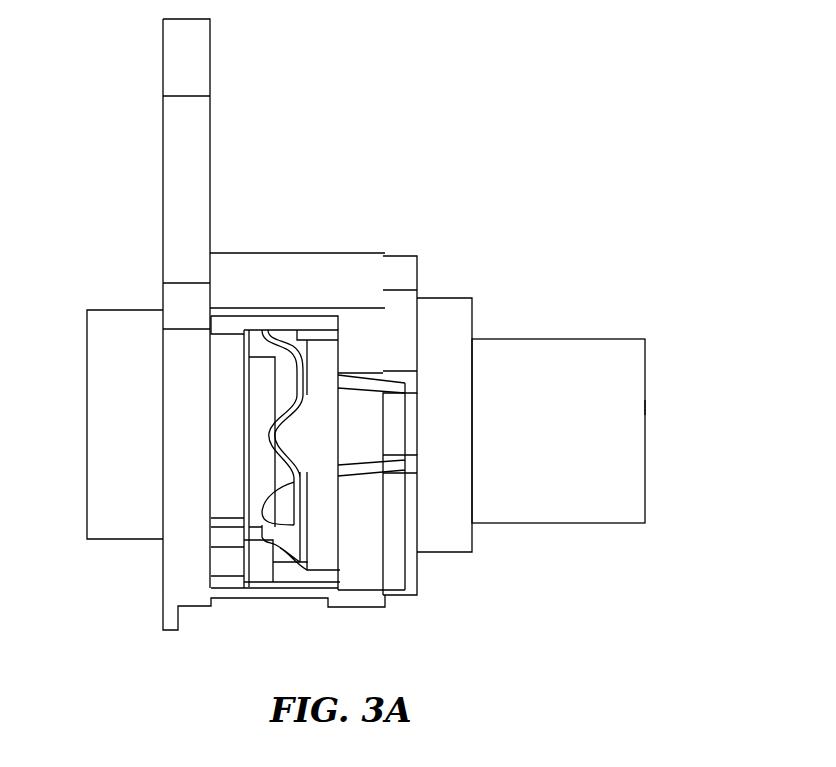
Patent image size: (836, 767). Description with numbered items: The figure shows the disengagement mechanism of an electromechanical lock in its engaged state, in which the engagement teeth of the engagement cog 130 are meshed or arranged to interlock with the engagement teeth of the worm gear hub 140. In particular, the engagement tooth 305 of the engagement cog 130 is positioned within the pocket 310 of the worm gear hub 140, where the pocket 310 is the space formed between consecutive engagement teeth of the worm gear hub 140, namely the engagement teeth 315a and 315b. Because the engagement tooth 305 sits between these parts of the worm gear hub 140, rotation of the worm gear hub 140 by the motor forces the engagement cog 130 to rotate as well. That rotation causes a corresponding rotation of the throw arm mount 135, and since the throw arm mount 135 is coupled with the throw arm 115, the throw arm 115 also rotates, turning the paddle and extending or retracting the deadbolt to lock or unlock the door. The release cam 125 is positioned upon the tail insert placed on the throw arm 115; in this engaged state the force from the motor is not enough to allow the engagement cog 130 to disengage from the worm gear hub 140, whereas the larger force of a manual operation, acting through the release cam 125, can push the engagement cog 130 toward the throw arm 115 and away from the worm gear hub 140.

The throw arm 115 is at (158, 189).
The release cam 125 is at (338, 365).
The engagement cog 130 is at (240, 384).
The throw arm mount 135 is at (316, 272).
The worm gear hub 140 is at (660, 407).
The engagement tooth 305 is at (362, 430).
The pocket 310 is at (422, 422).
The engagement tooth 315a is at (409, 295).
The engagement tooth 315b is at (409, 543).